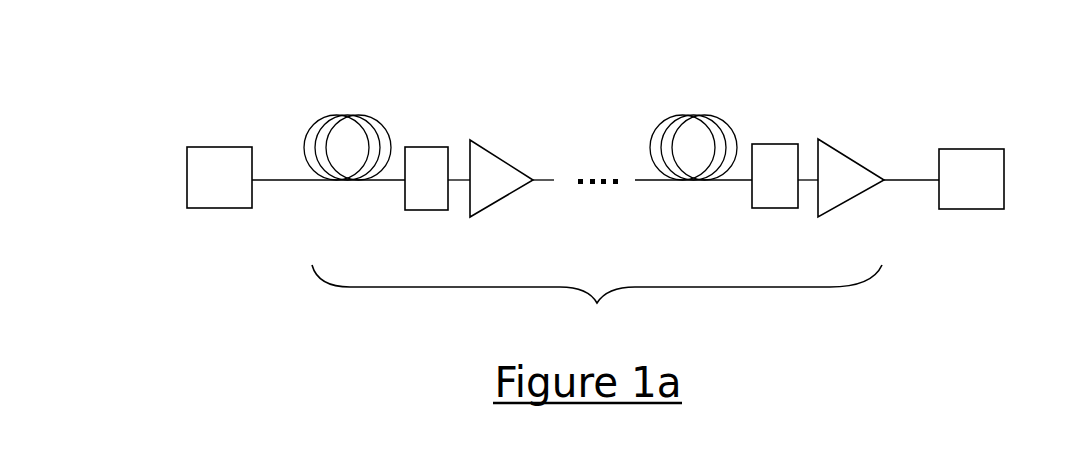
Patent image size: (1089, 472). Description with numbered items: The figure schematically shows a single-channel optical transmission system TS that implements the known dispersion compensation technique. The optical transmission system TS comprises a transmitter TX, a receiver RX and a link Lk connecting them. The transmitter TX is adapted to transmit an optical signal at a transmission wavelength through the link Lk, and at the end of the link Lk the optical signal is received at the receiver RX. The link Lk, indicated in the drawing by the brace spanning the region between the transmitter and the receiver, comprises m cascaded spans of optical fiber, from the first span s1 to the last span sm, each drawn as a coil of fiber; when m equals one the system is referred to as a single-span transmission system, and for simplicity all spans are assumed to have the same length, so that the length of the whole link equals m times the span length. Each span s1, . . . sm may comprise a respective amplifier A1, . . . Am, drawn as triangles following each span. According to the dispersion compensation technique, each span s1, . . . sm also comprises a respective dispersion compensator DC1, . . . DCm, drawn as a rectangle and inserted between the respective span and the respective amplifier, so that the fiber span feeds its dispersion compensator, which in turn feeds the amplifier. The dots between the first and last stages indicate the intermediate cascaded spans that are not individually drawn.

The transmitter TX is at (219, 177).
The receiver RX is at (971, 179).
The optical transmission system TS is at (335, 66).
The first span s1 is at (383, 128).
The m-th span sm is at (731, 128).
The first amplifier A1 is at (490, 153).
The m-th amplifier Am is at (839, 151).
The first dispersion compensator DC1 is at (422, 212).
The m-th dispersion compensator DCm is at (775, 210).
The link Lk is at (597, 301).